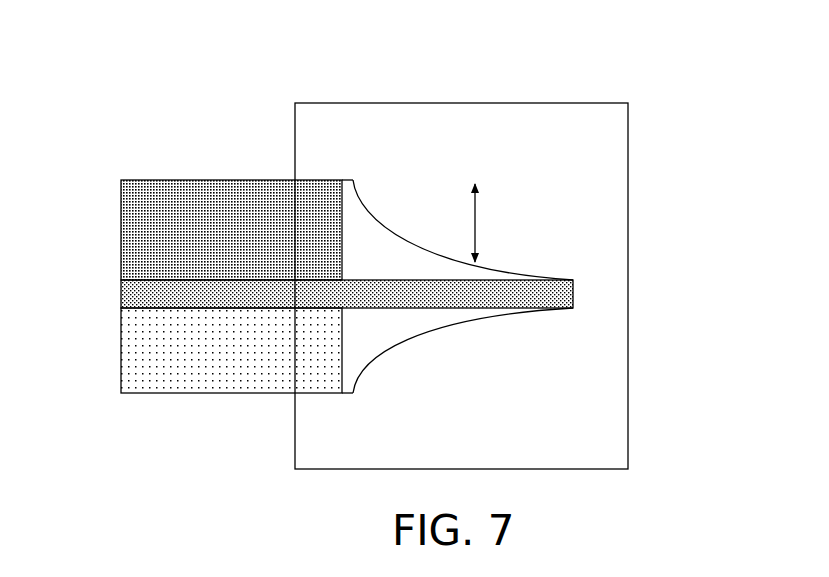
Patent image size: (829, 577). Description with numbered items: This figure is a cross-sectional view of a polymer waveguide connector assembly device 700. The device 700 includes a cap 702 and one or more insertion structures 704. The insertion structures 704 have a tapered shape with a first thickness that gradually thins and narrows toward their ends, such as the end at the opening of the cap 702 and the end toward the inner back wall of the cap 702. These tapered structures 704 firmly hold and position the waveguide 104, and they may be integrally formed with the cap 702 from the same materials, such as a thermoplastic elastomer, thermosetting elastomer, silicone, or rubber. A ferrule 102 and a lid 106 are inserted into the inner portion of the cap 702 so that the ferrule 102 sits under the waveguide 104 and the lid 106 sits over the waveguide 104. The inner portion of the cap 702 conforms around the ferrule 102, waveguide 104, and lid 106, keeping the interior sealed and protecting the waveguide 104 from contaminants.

The polymer waveguide connector assembly device 700 is at (373, 259).
The cap 702 is at (628, 134).
The insertion structures 704 is at (552, 267).
The lid 106 is at (221, 180).
The waveguide 104 is at (121, 297).
The ferrule 102 is at (210, 393).